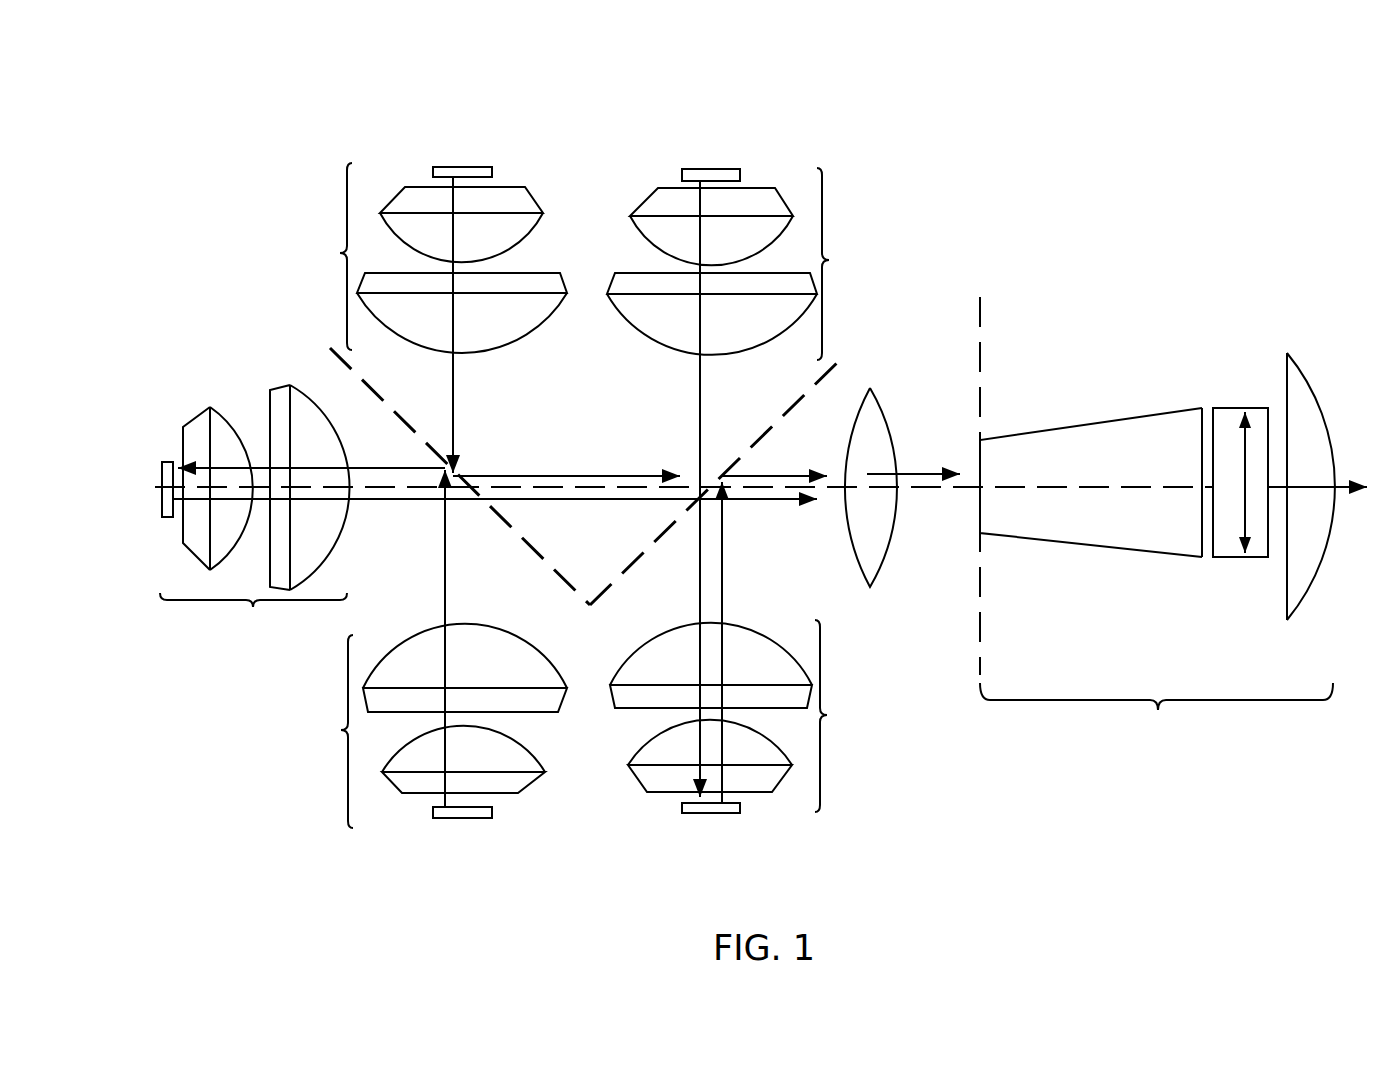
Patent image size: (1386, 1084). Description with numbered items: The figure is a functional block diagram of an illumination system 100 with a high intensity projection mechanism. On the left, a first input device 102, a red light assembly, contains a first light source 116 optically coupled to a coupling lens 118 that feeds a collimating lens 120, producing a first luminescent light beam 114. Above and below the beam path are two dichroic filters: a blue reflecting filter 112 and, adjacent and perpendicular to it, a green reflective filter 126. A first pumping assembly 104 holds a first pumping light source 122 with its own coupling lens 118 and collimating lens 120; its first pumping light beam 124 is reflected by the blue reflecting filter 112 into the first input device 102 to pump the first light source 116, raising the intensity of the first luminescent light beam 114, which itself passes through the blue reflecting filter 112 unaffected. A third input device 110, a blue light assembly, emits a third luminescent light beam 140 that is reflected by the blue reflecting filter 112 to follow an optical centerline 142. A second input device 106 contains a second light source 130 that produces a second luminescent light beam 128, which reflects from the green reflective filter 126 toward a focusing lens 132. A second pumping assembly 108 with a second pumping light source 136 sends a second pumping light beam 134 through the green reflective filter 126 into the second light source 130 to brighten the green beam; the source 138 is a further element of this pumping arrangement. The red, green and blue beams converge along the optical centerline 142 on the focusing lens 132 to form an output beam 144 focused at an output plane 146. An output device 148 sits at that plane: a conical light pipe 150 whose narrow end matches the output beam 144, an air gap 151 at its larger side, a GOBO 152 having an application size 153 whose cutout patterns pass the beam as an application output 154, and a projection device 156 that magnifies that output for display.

The illumination system 100 is at (380, 92).
The first input device 102 is at (253, 612).
The first pumping assembly 104 is at (341, 730).
The second input device 106 is at (828, 715).
The second pumping assembly 108 is at (832, 260).
The third input device 110 is at (340, 253).
The blue reflecting filter 112 is at (523, 542).
The first luminescent light beam 114 is at (420, 500).
The first light source 116 is at (165, 465).
The coupling lens 118 is at (217, 427).
The collimating lens 120 is at (313, 410).
The first pumping light source 122 is at (490, 818).
The first pumping light beam 124 is at (443, 565).
The green reflective filter 126 is at (777, 418).
The second luminescent light beam 128 is at (725, 528).
The second light source 130 is at (722, 813).
The focusing lens 132 is at (868, 433).
The second pumping light beam 134 is at (700, 453).
The second pumping light source 136 is at (688, 169).
The detector 138 is at (455, 167).
The third luminescent light beam 140 is at (453, 420).
The optical centerline 142 is at (943, 490).
The output beam 144 is at (905, 473).
The output plane 146 is at (982, 313).
The output device 148 is at (1158, 710).
The light pipe 150 is at (1043, 470).
The air gap 151 is at (1208, 547).
The GOBO 152 is at (1232, 420).
The application size 153 is at (1221, 500).
The application output 154 is at (1315, 490).
The projection device 156 is at (1300, 403).